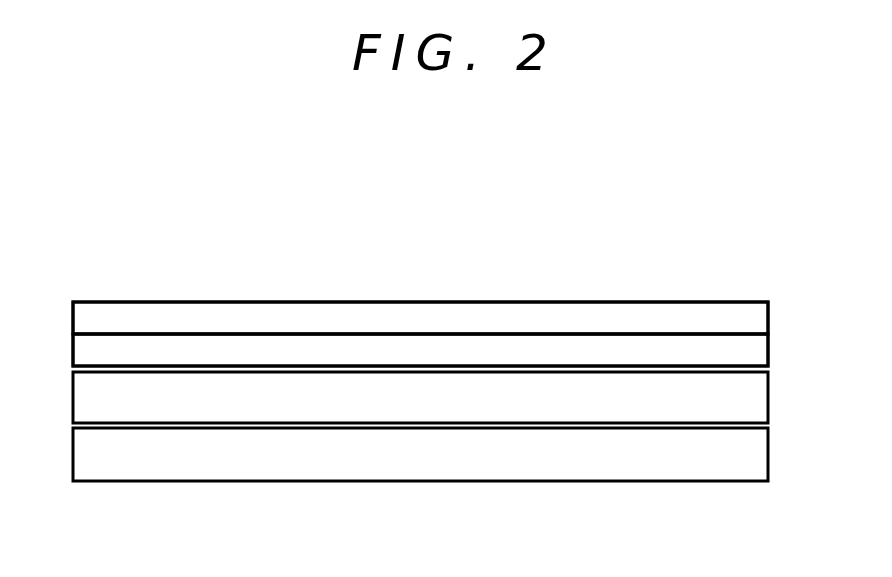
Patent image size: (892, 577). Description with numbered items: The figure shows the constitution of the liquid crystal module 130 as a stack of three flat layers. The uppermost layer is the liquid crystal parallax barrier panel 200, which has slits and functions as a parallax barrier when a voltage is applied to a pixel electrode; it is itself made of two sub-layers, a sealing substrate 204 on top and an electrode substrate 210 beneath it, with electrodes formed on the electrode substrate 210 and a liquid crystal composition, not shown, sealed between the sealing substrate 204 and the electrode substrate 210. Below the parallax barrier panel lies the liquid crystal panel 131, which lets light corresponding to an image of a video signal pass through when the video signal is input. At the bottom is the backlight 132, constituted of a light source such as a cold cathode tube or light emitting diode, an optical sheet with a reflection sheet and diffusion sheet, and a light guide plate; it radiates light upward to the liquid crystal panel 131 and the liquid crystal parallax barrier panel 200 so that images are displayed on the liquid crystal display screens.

The liquid crystal module 130 is at (423, 240).
The liquid crystal parallax barrier panel 200 is at (150, 302).
The sealing substrate 204 is at (638, 318).
The electrode substrate 210 is at (682, 345).
The liquid crystal panel 131 is at (250, 397).
The backlight 132 is at (363, 467).